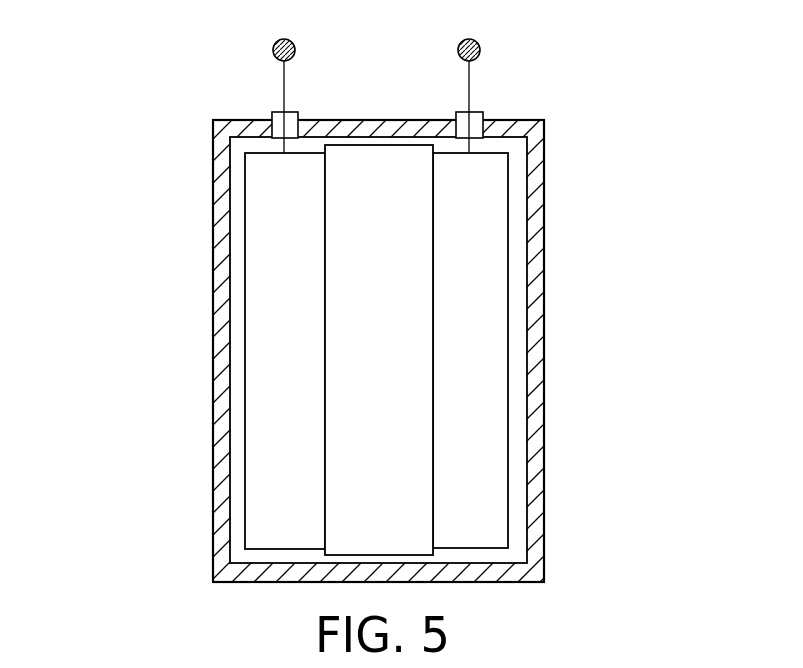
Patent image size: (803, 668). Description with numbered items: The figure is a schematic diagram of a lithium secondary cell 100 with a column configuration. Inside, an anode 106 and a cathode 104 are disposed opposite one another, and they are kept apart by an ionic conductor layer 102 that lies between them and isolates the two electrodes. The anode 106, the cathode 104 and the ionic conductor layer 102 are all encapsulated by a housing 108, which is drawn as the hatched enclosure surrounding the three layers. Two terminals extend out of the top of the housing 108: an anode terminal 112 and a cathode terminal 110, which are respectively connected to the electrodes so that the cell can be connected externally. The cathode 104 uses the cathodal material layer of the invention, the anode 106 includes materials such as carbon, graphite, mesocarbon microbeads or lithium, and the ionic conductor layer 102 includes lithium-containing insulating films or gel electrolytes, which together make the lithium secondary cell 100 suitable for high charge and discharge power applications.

The lithium secondary cell 100 is at (78, 47).
The ionic conductor layer 102 is at (408, 223).
The cathode 104 is at (477, 343).
The anode 106 is at (280, 345).
The housing 108 is at (538, 436).
The cathode terminal 110 is at (481, 50).
The anode terminal 112 is at (272, 50).